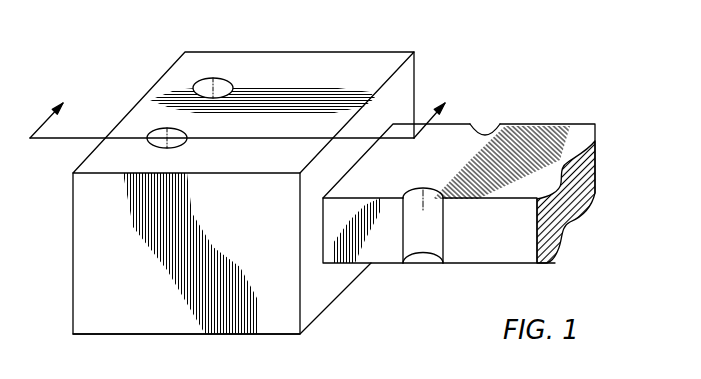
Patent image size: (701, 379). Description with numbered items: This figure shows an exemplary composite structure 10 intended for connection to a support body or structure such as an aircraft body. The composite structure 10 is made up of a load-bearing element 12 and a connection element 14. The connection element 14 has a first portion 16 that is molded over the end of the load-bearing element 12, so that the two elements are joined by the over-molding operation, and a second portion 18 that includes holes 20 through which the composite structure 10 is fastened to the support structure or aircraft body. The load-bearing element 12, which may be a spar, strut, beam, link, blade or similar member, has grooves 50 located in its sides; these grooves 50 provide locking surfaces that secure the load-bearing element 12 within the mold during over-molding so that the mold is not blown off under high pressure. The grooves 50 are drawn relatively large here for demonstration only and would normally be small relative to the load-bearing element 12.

The composite structure 10 is at (326, 195).
The load-bearing element 12 is at (572, 137).
The connection element 14 is at (108, 335).
The first portion 16 is at (407, 72).
The second portion 18 is at (87, 277).
The holes 20 is at (202, 83).
The grooves 50 is at (490, 133).